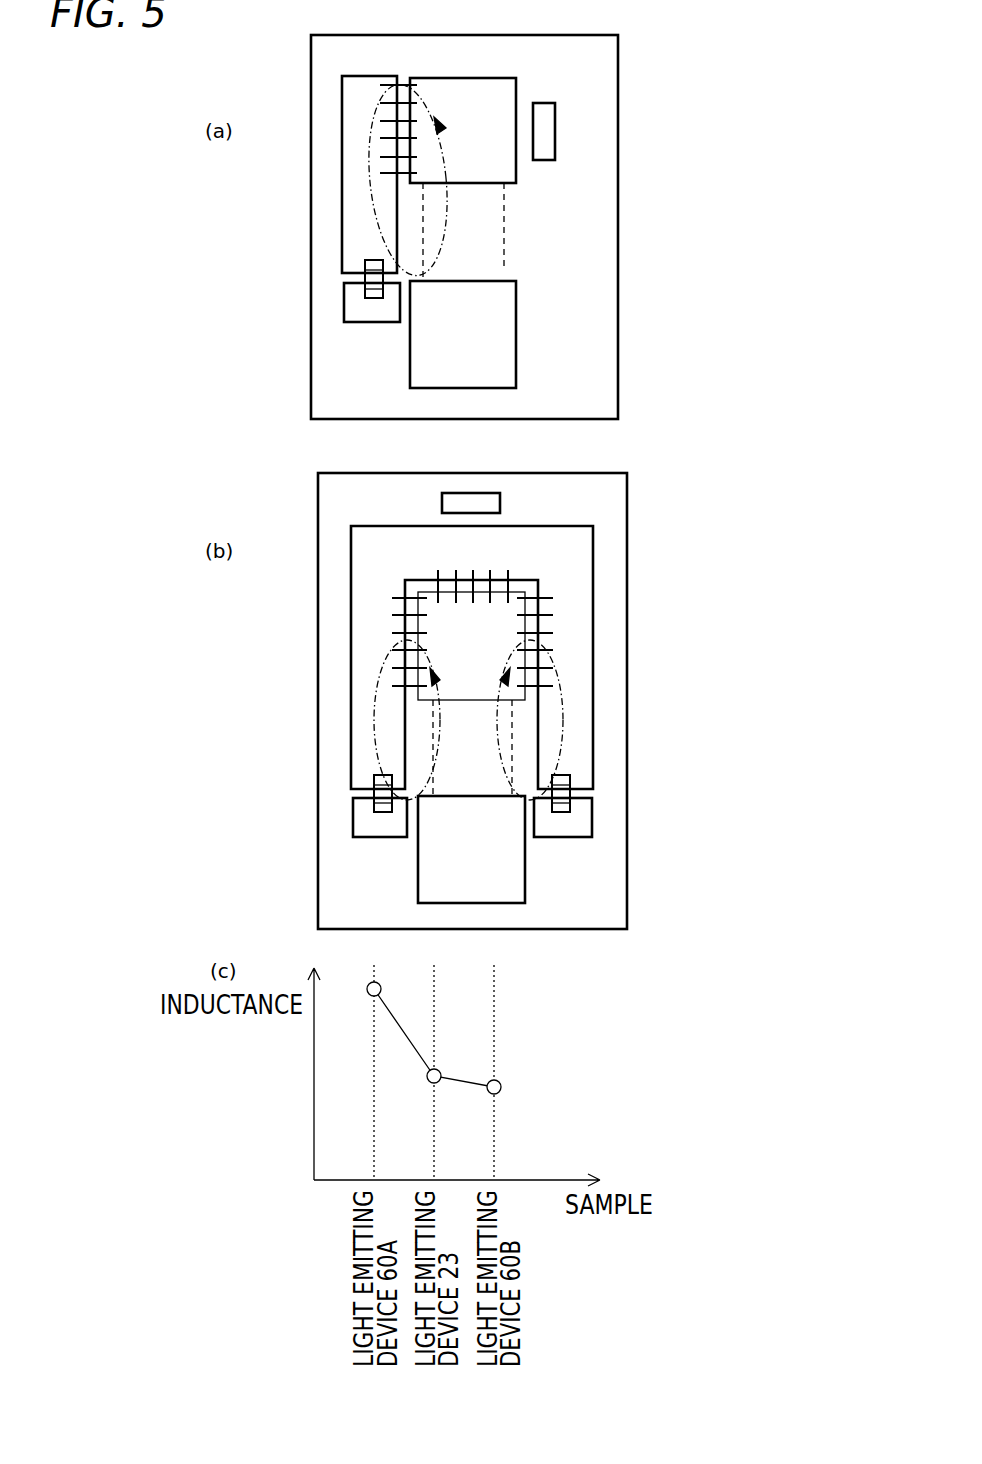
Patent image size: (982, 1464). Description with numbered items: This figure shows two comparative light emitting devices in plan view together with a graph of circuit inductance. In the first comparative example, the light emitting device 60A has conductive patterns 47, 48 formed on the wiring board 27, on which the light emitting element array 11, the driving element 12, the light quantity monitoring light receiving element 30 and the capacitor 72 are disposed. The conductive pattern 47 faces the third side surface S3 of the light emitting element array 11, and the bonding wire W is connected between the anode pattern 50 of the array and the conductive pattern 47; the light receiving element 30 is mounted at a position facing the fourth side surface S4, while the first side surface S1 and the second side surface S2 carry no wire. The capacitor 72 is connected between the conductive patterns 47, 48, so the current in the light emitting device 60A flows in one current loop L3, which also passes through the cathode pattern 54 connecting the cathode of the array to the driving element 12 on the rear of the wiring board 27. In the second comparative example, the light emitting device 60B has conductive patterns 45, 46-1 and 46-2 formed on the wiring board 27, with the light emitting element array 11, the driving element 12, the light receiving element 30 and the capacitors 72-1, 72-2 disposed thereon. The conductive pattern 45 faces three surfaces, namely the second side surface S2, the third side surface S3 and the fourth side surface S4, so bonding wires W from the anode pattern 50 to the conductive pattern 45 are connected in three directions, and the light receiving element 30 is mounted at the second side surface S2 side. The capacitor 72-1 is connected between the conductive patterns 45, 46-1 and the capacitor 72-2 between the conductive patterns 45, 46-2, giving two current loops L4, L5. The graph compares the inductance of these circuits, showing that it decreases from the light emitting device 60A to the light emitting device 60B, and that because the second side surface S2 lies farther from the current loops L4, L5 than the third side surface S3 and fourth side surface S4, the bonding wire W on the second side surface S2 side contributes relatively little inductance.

The light emitting element array 11 is at (447, 78).
The driving element 12 is at (455, 388).
The wiring board 27 is at (618, 205).
The light quantity monitoring light receiving element 30 is at (555, 128).
The conductive pattern 45 is at (351, 690).
The conductive pattern 46-1 is at (354, 820).
The conductive pattern 46-2 is at (594, 820).
The conductive pattern 47 is at (342, 178).
The conductive pattern 48 is at (344, 303).
The anode pattern 50 is at (450, 117).
The cathode pattern 54 is at (490, 265).
The light emitting device 60A is at (660, 48).
The light emitting device 60B is at (670, 482).
The capacitor 72 is at (365, 277).
The capacitor 72-1 is at (374, 790).
The capacitor 72-2 is at (575, 790).
The bonding wire W is at (405, 86).
The first side surface S1 is at (508, 185).
The second side surface S2 is at (495, 78).
The third side surface S3 is at (386, 105).
The fourth side surface S4 is at (518, 85).
The current loop L3 is at (463, 232).
The current loop L4 is at (451, 748).
The current loop L5 is at (489, 748).